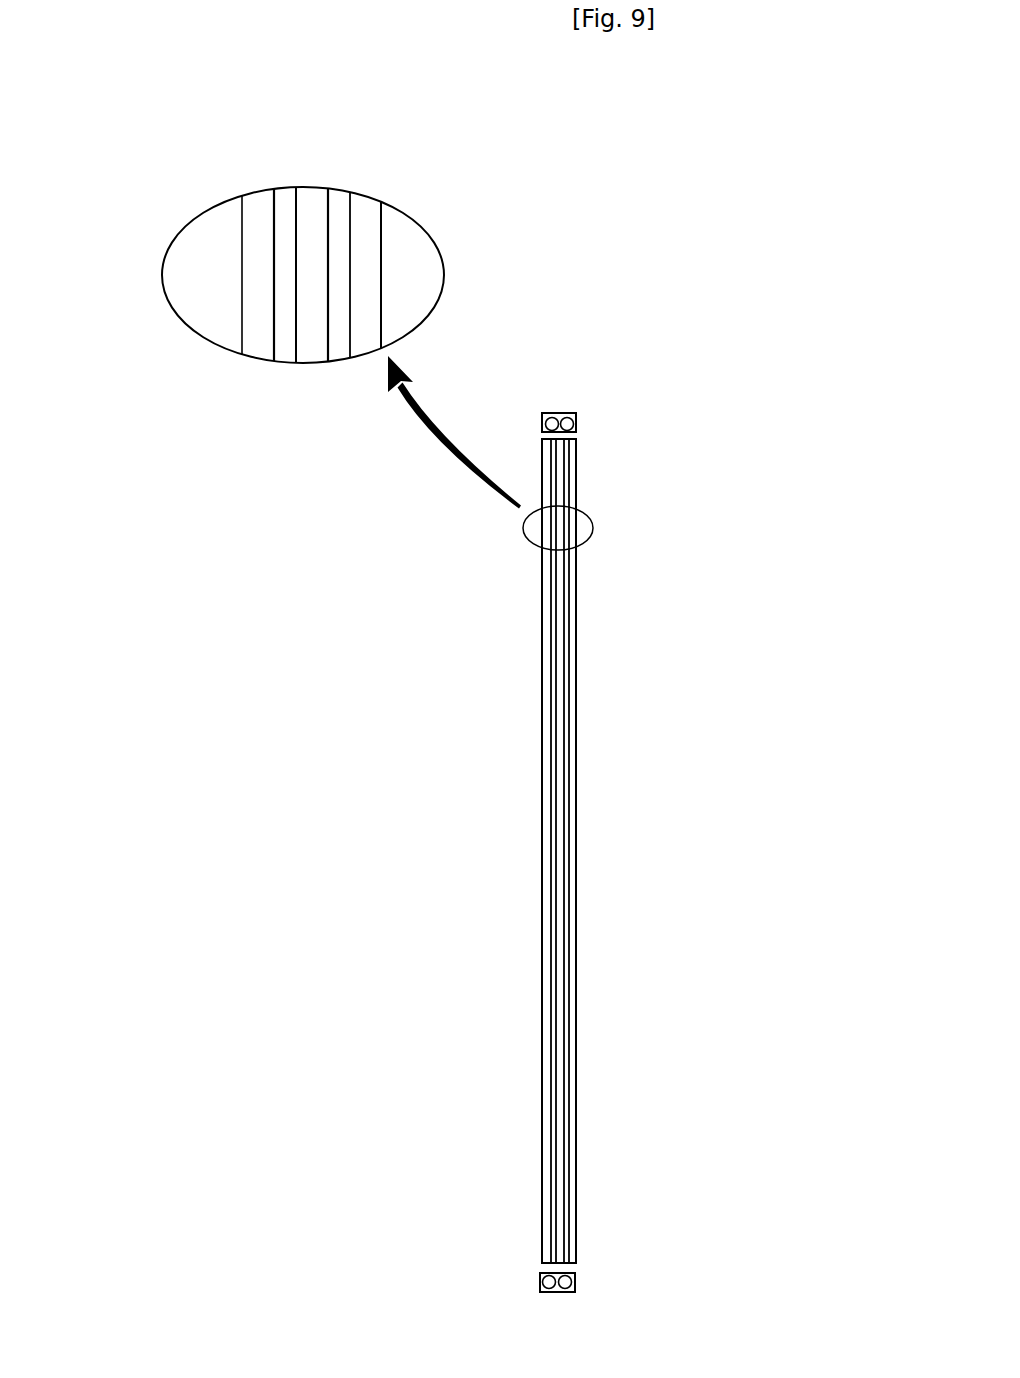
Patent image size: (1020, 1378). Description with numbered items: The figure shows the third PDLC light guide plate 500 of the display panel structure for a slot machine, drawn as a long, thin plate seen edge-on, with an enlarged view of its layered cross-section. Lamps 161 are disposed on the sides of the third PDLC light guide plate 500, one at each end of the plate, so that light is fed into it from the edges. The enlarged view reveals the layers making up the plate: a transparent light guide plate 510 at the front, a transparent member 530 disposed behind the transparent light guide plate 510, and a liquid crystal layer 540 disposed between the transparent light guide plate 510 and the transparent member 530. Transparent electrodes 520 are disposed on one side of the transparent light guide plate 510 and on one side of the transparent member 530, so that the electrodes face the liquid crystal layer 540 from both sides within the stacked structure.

The third PDLC light guide plate 500 is at (497, 749).
The transparent light guide plate 510 is at (258, 306).
The transparent electrodes 520 is at (338, 197).
The transparent member 530 is at (367, 200).
The liquid crystal layer 540 is at (318, 350).
The lamps 161 is at (562, 413).